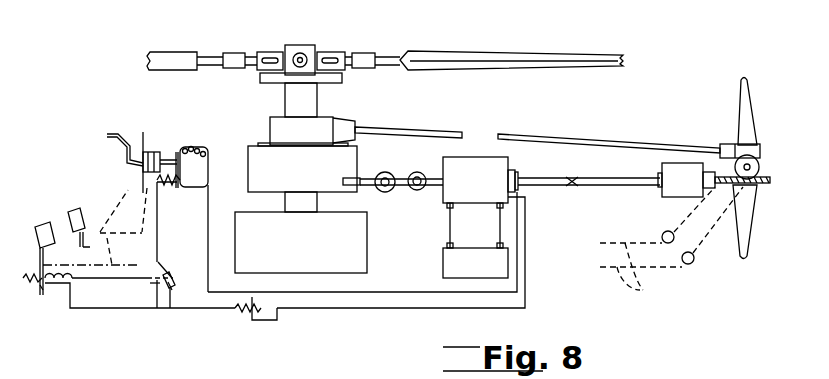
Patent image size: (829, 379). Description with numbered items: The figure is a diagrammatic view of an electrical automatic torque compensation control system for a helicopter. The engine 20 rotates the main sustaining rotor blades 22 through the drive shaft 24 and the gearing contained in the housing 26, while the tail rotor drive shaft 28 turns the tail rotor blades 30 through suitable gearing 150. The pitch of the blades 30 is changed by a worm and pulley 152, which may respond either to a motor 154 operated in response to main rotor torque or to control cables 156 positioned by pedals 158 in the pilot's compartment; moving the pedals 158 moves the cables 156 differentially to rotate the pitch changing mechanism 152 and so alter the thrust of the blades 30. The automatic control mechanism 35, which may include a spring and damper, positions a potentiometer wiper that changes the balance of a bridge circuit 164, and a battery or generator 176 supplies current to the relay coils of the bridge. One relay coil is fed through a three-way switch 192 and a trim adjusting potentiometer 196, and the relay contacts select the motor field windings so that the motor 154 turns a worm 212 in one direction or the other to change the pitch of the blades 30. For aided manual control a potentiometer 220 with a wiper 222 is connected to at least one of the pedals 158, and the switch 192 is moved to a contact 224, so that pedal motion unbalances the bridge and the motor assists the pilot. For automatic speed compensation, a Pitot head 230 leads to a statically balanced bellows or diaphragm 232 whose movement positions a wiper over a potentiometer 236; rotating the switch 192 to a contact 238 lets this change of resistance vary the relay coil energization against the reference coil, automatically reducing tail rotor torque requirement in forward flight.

The engine 20 is at (307, 250).
The blades 22 is at (167, 52).
The drive shaft 24 is at (317, 102).
The housing 26 is at (310, 180).
The control rod 28 is at (437, 133).
The tail rotor blades 30 is at (757, 122).
The automatic control mechanism 35 is at (403, 199).
The gearing 150 is at (742, 146).
The worm and pulley 152 is at (758, 167).
The motor 154 is at (677, 165).
The control cables 156 is at (130, 196).
The pedals 158 is at (68, 228).
The bridge circuit 164 is at (492, 193).
The battery or generator 176 is at (497, 275).
The three-way switch 192 is at (168, 288).
The trim adjusting potentiometer 196 is at (245, 320).
The worm 212 is at (748, 184).
The potentiometer 220 is at (55, 290).
The wiper 222 is at (40, 286).
The contact 224 is at (152, 283).
The Pitot head 230 is at (110, 134).
The bellows or diaphragm 232 is at (148, 152).
The potentiometer 236 is at (207, 185).
The contact 238 is at (157, 262).